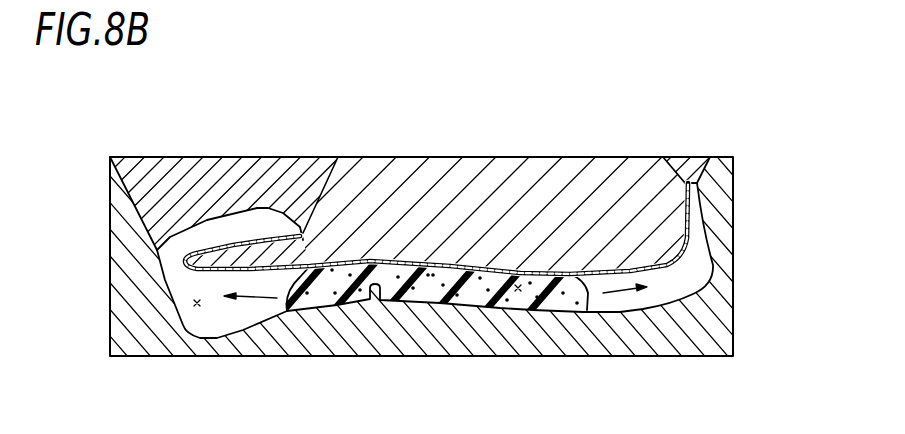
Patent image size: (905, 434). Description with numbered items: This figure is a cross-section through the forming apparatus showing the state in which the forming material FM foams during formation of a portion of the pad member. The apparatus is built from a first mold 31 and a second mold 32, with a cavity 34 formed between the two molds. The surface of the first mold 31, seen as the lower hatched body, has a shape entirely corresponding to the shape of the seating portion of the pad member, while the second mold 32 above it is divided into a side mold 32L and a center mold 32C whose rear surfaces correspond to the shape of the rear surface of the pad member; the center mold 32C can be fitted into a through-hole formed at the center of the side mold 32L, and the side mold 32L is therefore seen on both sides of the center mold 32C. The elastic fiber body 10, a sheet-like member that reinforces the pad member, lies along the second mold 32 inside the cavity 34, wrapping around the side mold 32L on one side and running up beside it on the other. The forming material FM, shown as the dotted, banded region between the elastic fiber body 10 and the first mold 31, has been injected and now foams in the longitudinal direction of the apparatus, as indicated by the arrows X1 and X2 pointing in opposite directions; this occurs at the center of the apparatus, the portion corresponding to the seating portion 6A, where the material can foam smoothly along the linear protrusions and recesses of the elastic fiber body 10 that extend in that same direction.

The second mold 32 is at (186, 157).
The first mold 31 is at (733, 310).
The side mold 32L is at (270, 183).
The center mold 32C is at (507, 223).
The elastic fiber body 10 is at (358, 258).
The seating portion 6A is at (519, 286).
The forming material FM is at (468, 288).
The cavity 34 is at (196, 306).
The arrow X1 is at (251, 298).
The arrow X2 is at (612, 292).